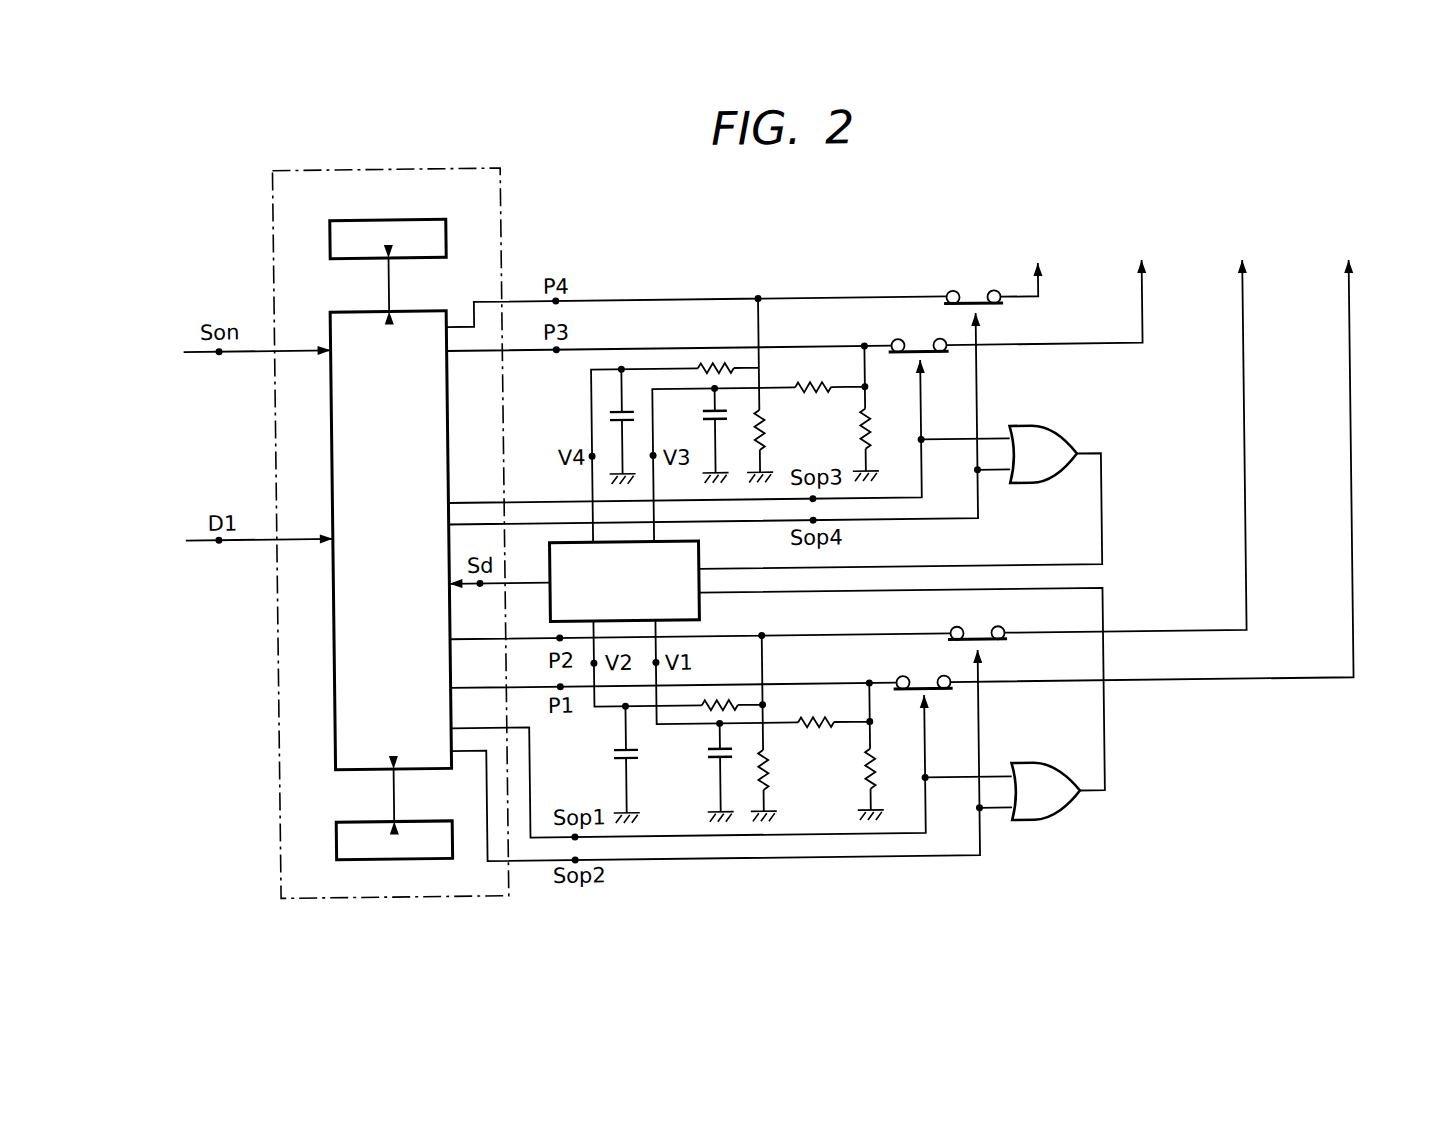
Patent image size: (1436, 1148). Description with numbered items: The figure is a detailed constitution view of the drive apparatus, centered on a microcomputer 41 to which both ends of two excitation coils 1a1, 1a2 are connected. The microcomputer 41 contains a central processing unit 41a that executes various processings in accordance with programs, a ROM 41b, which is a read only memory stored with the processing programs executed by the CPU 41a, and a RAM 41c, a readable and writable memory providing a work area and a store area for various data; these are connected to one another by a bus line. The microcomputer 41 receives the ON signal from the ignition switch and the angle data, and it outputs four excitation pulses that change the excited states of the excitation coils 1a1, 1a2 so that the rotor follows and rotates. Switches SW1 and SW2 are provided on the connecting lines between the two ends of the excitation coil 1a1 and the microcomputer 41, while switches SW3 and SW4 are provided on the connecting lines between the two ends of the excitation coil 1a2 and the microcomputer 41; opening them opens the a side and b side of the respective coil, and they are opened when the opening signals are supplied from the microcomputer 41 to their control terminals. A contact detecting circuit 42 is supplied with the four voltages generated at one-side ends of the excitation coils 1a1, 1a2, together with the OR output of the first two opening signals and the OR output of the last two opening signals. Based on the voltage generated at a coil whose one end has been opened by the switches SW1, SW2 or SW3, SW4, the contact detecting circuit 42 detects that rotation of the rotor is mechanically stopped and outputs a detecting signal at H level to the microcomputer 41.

The microcomputer 41 is at (507, 188).
The central processing unit 41a is at (413, 309).
The ROM 41b is at (415, 815).
The RAM 41c is at (414, 215).
The contact detecting circuit 42 is at (702, 551).
The excitation coil 1a1 is at (1296, 206).
The excitation coil 1a2 is at (1088, 206).
The switch SW1 is at (915, 672).
The switch SW2 is at (970, 626).
The switch SW3 is at (916, 337).
The switch SW4 is at (971, 293).